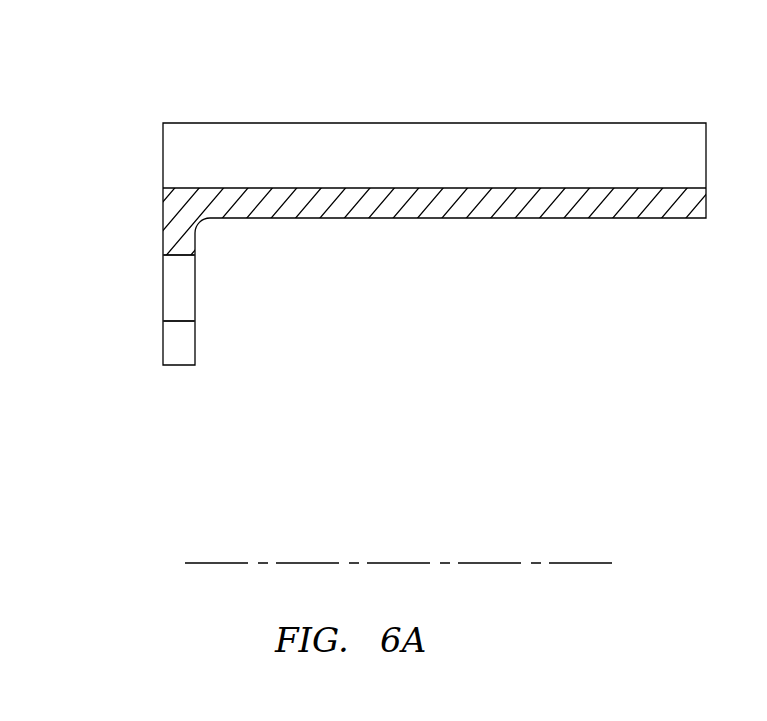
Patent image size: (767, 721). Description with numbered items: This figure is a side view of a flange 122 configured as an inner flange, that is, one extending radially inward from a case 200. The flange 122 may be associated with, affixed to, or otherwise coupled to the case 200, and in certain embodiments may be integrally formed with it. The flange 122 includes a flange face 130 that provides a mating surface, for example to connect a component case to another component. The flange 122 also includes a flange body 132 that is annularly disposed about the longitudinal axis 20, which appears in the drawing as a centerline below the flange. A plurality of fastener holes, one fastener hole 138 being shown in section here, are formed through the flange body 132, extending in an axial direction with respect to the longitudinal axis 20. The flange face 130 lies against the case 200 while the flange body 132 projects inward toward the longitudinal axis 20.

The longitudinal axis 20 is at (600, 560).
The flange 122 is at (110, 298).
The flange face 130 is at (163, 207).
The flange body 132 is at (166, 230).
The fastener hole 138 is at (213, 291).
The case 200 is at (346, 145).